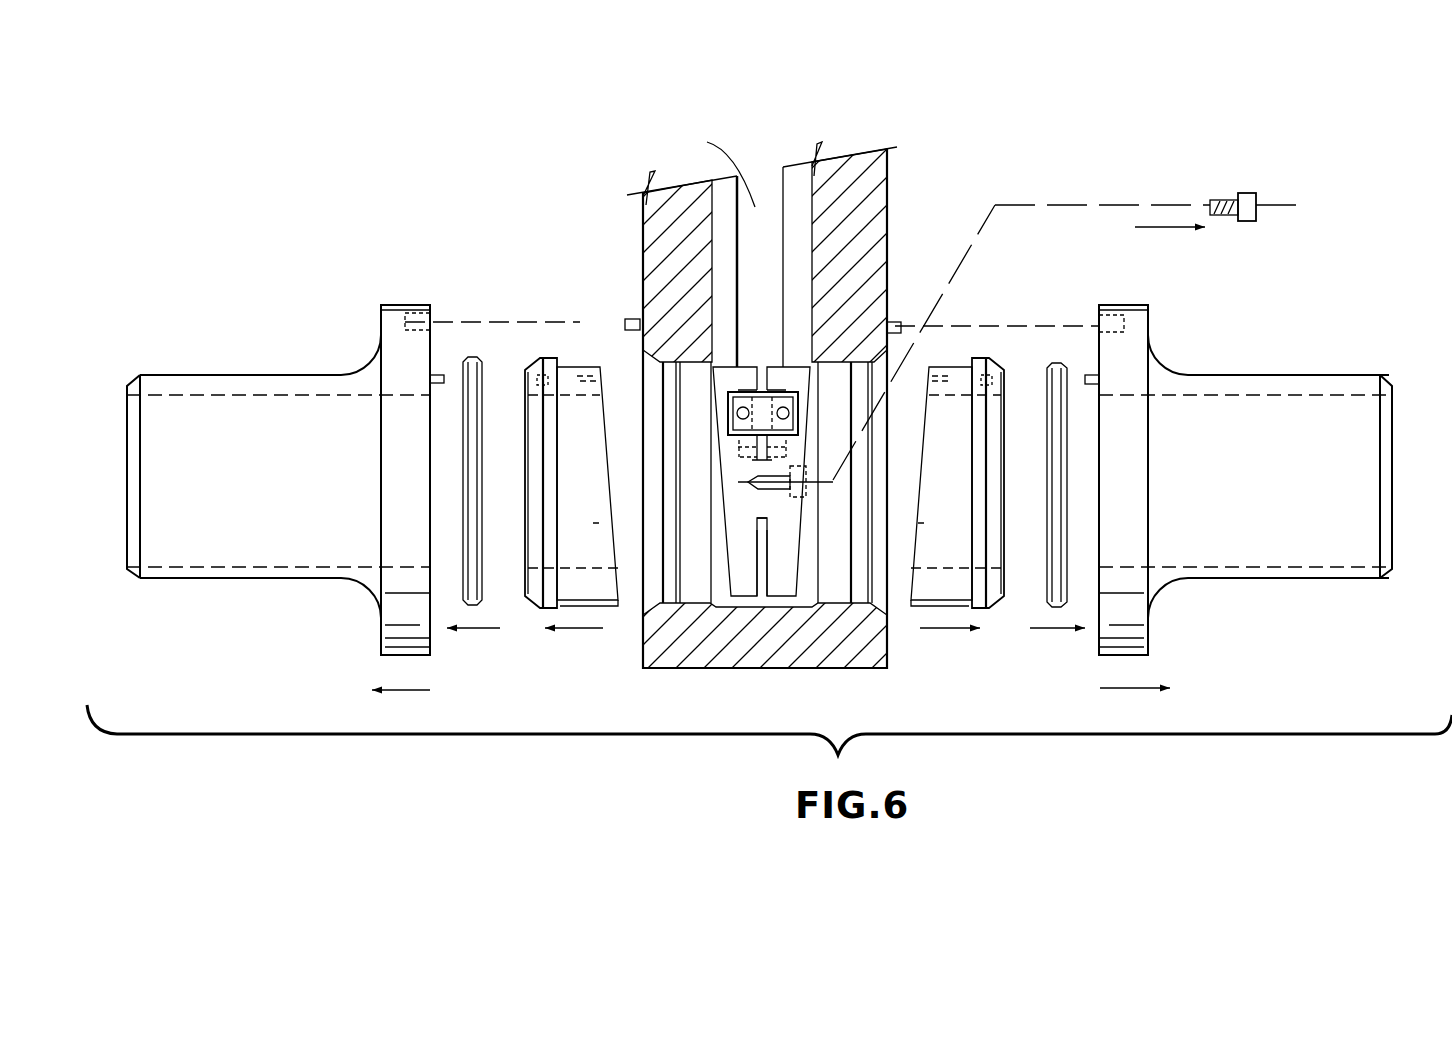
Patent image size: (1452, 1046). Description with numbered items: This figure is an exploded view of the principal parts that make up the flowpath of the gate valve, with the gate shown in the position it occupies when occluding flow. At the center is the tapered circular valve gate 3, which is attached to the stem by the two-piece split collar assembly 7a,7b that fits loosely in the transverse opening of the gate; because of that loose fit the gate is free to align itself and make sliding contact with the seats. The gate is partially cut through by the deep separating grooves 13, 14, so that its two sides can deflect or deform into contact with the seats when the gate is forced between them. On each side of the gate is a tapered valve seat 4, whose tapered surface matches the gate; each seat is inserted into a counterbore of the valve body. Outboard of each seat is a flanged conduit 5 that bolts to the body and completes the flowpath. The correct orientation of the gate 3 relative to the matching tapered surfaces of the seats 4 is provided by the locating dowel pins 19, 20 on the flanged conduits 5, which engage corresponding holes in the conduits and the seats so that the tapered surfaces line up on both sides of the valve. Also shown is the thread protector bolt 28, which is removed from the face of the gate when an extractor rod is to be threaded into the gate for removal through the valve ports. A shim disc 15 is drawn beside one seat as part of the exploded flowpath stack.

The tapered circular valve gate 3 is at (785, 568).
The tapered valve seat 4 is at (545, 353).
The flanged conduit 5 is at (270, 373).
The split collar assembly 7a,7b is at (790, 430).
The separating groove 13 is at (750, 553).
The separating groove 14 is at (887, 258).
The shim disc 15 is at (1053, 360).
The locating dowel pin 19 is at (440, 372).
The locating dowel pin 20 is at (626, 322).
The thread protector bolt 28 is at (1238, 223).